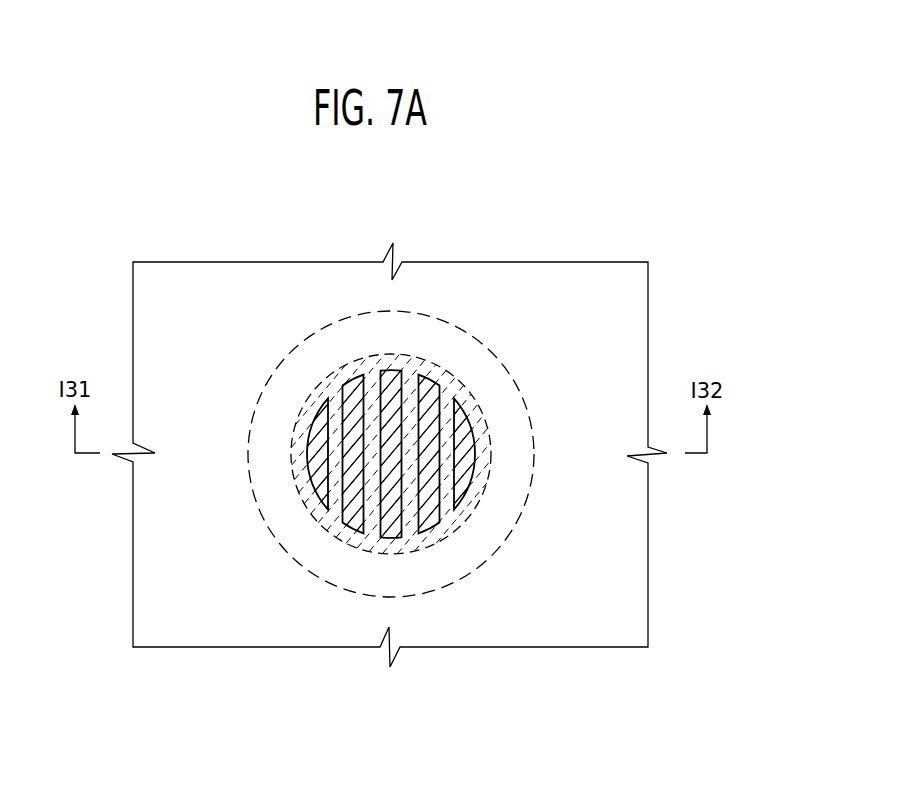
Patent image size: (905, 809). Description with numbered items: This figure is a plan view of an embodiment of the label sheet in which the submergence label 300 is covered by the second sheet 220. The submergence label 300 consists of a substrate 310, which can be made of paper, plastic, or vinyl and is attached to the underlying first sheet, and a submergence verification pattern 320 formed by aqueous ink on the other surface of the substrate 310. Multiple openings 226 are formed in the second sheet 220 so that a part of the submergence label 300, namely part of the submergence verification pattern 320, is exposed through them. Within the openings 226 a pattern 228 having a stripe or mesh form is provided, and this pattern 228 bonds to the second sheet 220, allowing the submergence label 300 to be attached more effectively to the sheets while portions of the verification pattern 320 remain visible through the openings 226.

The second sheet 220 is at (640, 292).
The openings 226 is at (486, 486).
The pattern 228 is at (408, 514).
The submergence label 300 is at (552, 201).
The substrate 310 is at (482, 334).
The submergence verification pattern 320 is at (403, 343).